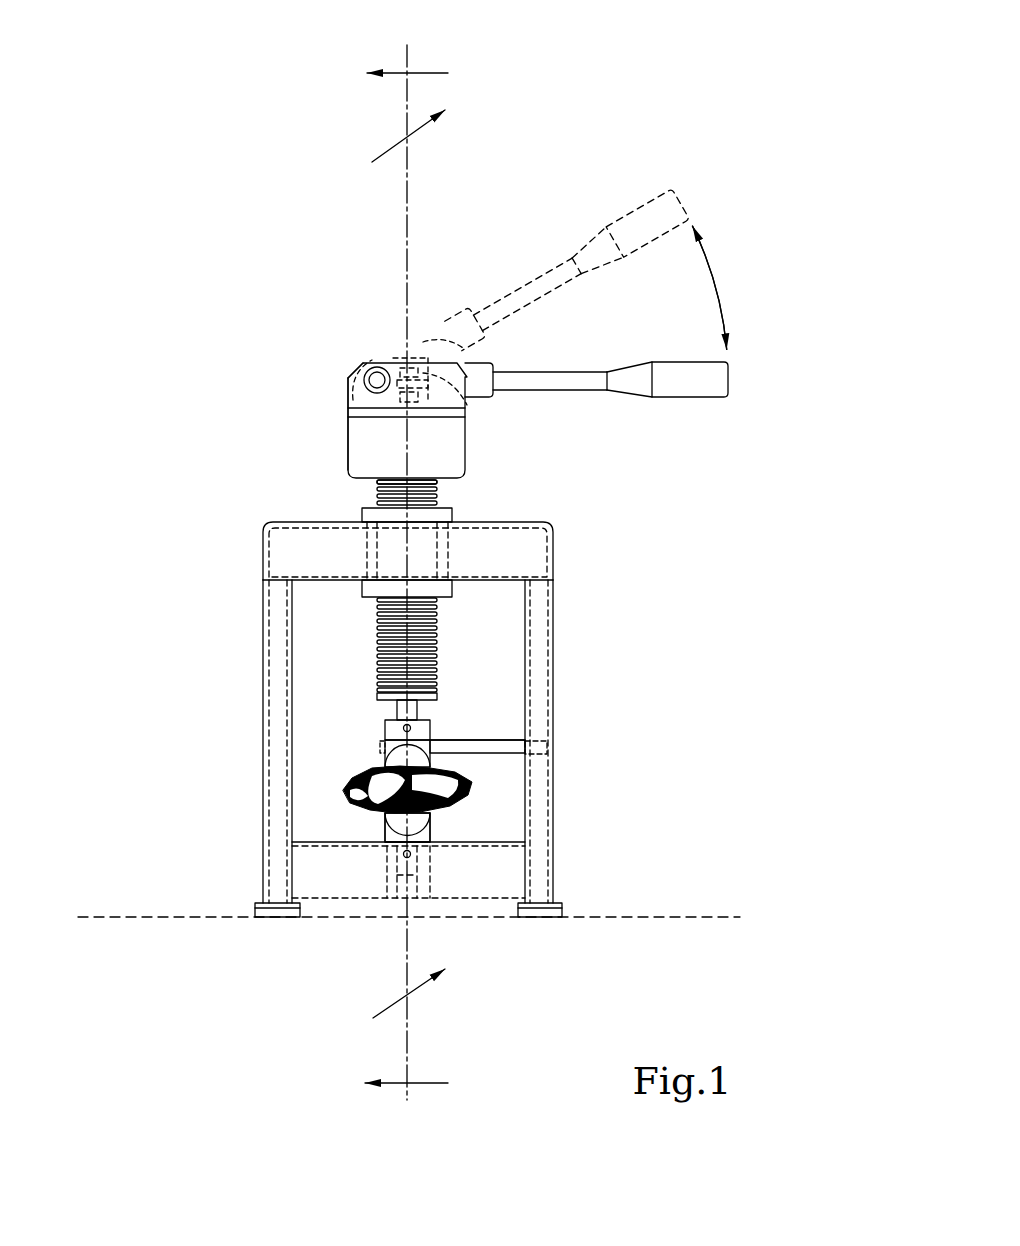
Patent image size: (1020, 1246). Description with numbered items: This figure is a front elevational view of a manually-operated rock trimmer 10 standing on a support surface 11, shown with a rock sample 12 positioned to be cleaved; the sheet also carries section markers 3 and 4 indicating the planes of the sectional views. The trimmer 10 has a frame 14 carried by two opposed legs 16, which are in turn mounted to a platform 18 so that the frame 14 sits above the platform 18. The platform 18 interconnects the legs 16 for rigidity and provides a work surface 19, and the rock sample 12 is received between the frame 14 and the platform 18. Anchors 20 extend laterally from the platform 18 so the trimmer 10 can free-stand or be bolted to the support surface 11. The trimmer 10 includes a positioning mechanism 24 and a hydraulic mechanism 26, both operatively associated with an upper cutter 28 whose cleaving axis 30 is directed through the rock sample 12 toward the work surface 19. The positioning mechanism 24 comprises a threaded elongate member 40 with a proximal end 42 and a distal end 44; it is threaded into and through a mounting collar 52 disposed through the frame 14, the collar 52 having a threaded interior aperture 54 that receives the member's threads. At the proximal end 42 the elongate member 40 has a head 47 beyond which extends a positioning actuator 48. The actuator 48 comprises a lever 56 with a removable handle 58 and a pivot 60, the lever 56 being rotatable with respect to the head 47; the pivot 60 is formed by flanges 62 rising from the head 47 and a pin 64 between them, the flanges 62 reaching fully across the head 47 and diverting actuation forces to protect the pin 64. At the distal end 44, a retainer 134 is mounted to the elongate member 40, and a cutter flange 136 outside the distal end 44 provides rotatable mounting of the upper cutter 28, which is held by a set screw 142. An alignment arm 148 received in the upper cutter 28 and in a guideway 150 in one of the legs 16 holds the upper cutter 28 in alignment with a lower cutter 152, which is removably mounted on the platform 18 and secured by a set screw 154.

The section line 3- 3 is at (417, 579).
The section line 4- 4 is at (391, 572).
The rock trimmer 10 is at (463, 580).
The support surface 11 is at (389, 873).
The rock sample 12 is at (556, 771).
The frame 14 is at (349, 542).
The legs 16 is at (413, 741).
The platform 18 is at (488, 855).
The work surface 19 is at (276, 895).
The anchors 20 is at (476, 889).
The positioning mechanism 24 is at (339, 321).
The hydraulic mechanism 26 is at (280, 337).
The upper cutter 28 is at (293, 789).
The cleaving axis 30 is at (458, 572).
The elongate member 40 is at (567, 586).
The proximal end 42 is at (317, 483).
The distal end 44 is at (281, 665).
The head 47 is at (501, 426).
The positioning actuator 48 is at (610, 311).
The mounting collar 52 is at (521, 544).
The threaded interior aperture 54 is at (556, 526).
The lever 56 is at (566, 270).
The handle 58 is at (771, 406).
The pivot 60 is at (273, 424).
The flanges 62 is at (563, 402).
The pin 64 is at (314, 283).
The retainer 134 is at (287, 627).
The cutter flange 136 is at (284, 702).
The set screw 142 is at (556, 677).
The alignment arm 148 is at (569, 700).
The guideway 150 is at (544, 726).
The lower cutter 152 is at (543, 802).
The set screw 154 is at (483, 919).